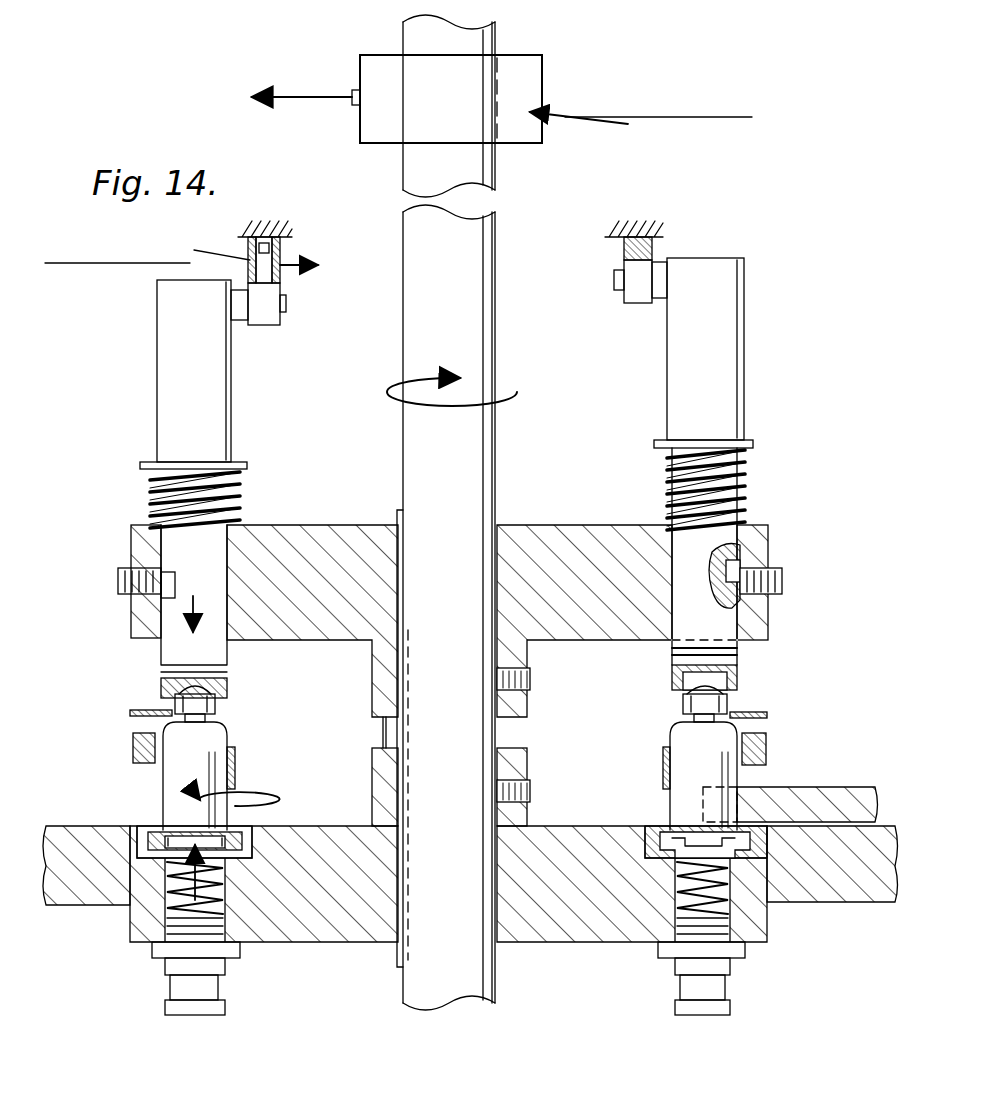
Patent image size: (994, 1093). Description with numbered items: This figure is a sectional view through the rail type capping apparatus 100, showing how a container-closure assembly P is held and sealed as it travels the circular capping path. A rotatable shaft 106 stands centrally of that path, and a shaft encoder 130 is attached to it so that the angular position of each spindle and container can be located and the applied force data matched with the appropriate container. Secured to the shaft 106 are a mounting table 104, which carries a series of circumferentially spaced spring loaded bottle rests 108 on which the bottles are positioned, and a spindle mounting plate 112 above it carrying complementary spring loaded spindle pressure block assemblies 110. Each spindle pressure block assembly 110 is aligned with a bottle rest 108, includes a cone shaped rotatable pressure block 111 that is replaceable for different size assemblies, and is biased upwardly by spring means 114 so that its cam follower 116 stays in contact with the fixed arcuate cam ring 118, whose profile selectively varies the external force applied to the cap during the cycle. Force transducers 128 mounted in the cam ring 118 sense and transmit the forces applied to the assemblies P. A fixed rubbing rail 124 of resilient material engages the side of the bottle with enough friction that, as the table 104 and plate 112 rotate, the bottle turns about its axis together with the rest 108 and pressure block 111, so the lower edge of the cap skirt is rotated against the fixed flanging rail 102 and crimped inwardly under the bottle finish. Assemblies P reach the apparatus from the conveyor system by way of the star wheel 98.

The shaft encoder 130 is at (544, 78).
The rotatable shaft 106 is at (403, 450).
The capping apparatus 100 is at (752, 344).
The spindle pressure block assembly 110 is at (740, 415).
The spindle mounting plate 112 is at (558, 532).
The spring means 114 is at (748, 490).
The rotatable pressure block 111 is at (742, 666).
The cam ring 118 is at (285, 243).
The force transducer 128 is at (275, 278).
The cam follower 116 is at (633, 298).
The mounting table 104 is at (578, 830).
The bottle rest 108 is at (240, 828).
The container-closure assembly P is at (222, 750).
The flanging rail 102 is at (145, 710).
The rubbing rail 124 is at (768, 745).
The star wheel 98 is at (840, 790).